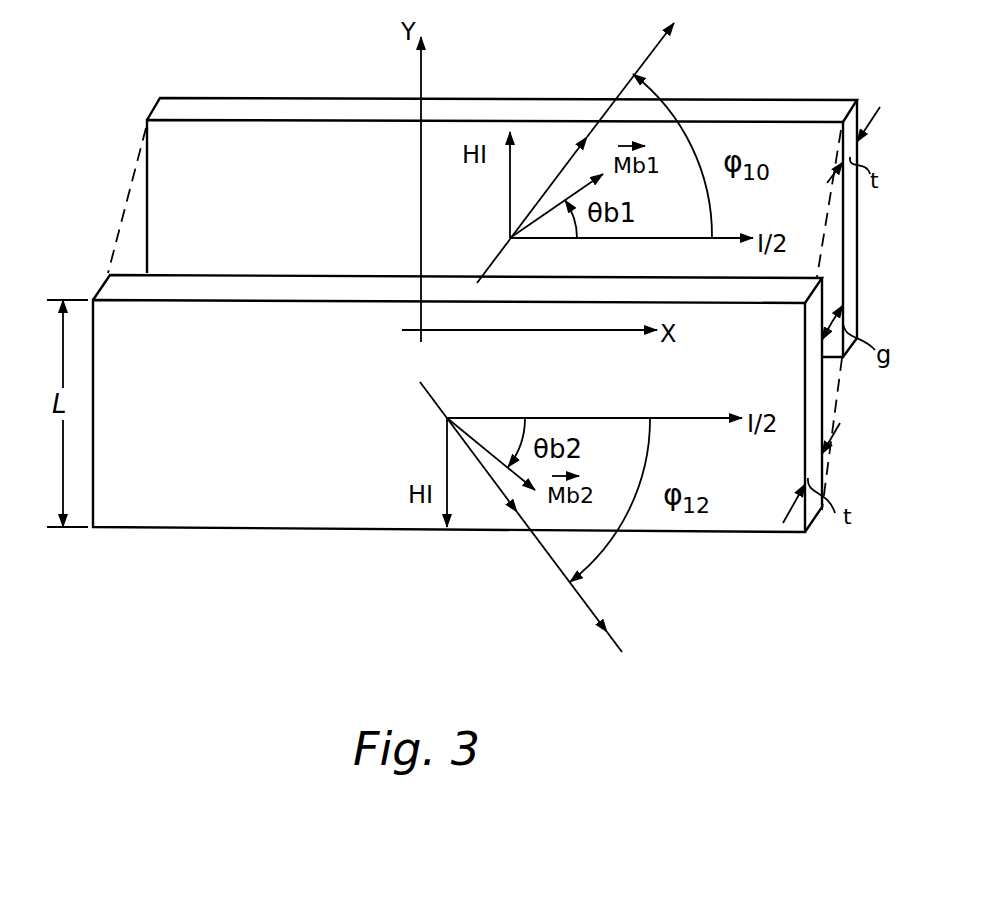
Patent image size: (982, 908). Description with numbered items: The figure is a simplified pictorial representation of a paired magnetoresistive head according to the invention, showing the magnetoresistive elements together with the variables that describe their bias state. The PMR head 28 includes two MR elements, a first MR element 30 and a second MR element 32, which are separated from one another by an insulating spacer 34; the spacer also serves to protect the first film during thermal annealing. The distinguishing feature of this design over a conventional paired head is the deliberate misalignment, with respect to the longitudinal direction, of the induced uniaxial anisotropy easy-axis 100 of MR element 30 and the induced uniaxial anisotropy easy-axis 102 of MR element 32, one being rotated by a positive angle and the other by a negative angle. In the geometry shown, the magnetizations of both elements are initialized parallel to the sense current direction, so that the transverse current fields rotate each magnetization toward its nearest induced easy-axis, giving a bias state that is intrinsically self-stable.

The PMR head 28 is at (134, 80).
The MR element 30 is at (197, 165).
The MR element 32 is at (153, 347).
The insulating spacer 34 is at (123, 203).
The induced uniaxial anisotropy easy-axis 100 is at (645, 59).
The induced uniaxial anisotropy easy-axis 102 is at (560, 578).